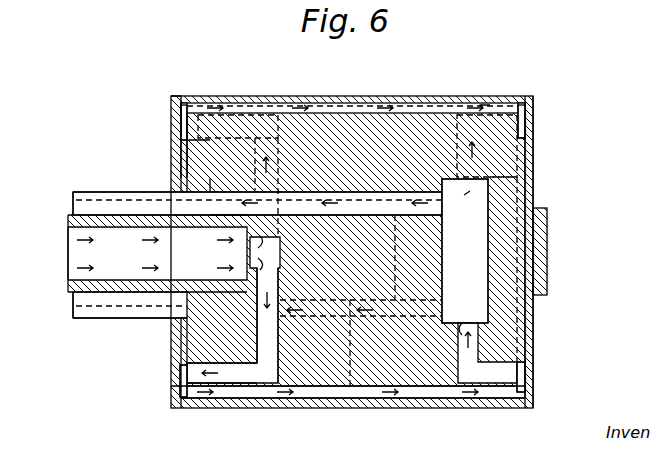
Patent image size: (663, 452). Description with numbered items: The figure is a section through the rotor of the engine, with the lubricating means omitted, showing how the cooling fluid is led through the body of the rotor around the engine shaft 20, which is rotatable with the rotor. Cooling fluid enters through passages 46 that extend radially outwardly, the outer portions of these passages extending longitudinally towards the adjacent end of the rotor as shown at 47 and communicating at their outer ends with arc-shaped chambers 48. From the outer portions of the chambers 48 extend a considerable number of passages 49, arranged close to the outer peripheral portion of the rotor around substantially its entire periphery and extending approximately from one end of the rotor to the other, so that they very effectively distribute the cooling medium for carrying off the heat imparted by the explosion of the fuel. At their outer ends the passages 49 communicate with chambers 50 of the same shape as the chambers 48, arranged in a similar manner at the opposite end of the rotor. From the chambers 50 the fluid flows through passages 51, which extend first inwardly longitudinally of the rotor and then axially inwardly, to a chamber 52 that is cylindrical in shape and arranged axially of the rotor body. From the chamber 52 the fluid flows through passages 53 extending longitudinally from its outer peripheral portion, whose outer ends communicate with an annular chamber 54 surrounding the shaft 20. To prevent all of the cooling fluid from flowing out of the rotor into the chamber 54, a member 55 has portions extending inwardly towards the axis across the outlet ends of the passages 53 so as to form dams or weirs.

The engine shaft 20 is at (78, 297).
The passages 46 is at (276, 150).
The outer portions of the passages 47 is at (236, 97).
The arc-shaped chambers 48 is at (181, 100).
The passages 49 is at (462, 98).
The chambers 50 is at (537, 118).
The passages 51 is at (512, 95).
The chamber 52 is at (470, 250).
The passages 53 is at (393, 195).
The annular chamber 54 is at (137, 200).
The member 55 is at (185, 185).